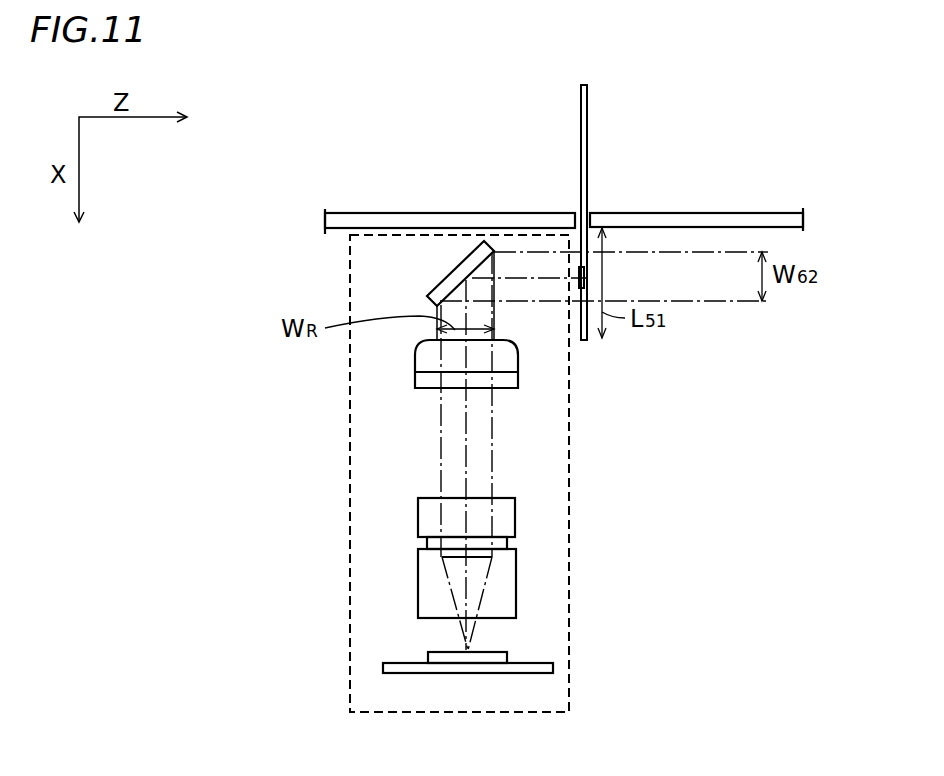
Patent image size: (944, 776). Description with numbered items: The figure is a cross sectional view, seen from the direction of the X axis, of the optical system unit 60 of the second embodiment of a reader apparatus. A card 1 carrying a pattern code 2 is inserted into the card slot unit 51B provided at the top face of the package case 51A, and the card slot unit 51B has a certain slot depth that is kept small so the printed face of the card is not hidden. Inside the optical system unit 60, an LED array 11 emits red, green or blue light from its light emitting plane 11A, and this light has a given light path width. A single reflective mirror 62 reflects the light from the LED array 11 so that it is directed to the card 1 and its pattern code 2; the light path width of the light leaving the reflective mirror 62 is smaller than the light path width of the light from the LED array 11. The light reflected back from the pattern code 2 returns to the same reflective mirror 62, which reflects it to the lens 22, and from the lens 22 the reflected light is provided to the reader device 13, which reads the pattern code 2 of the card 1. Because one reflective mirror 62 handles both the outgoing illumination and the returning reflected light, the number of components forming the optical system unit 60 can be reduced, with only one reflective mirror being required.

The card 1 is at (581, 105).
The pattern code 2 is at (587, 281).
The LED array 11 is at (415, 381).
The light emitting plane 11A is at (456, 342).
The reader device 13 is at (383, 669).
The lens 22 is at (418, 518).
The package case 51A is at (710, 213).
The card slot unit 51B is at (590, 213).
The optical system unit 60 is at (569, 615).
The reflective mirror 62 is at (457, 270).